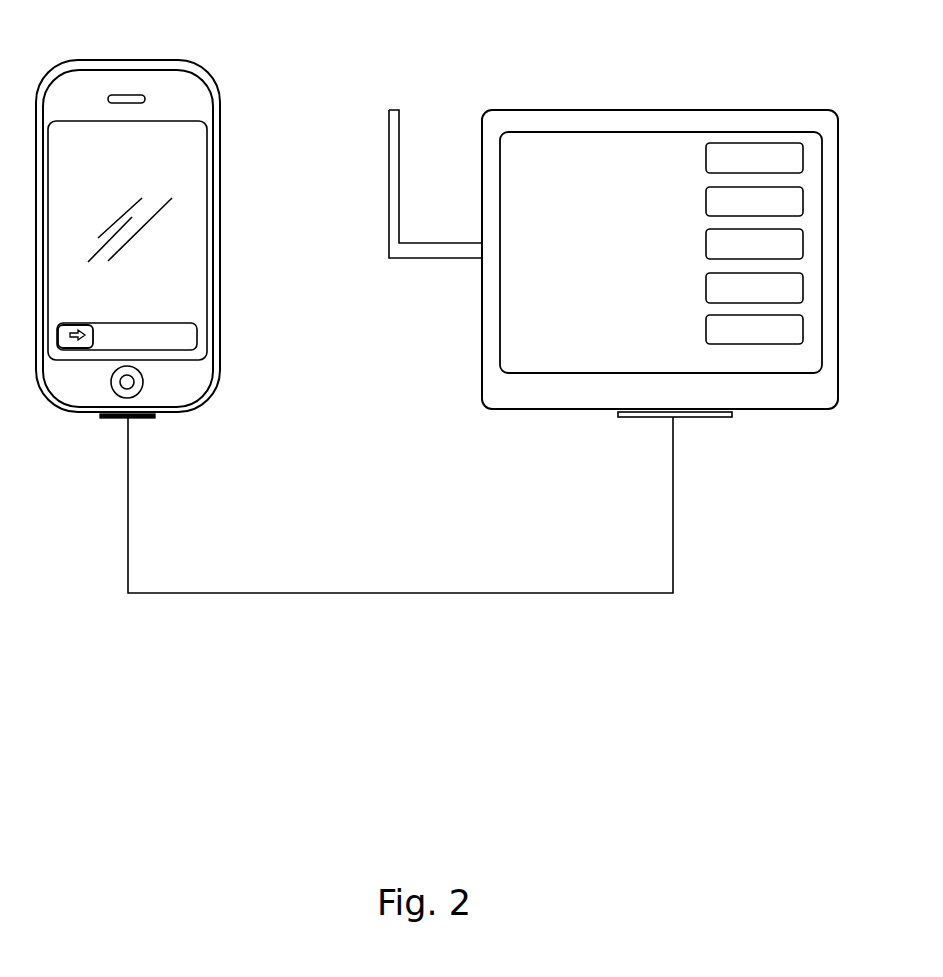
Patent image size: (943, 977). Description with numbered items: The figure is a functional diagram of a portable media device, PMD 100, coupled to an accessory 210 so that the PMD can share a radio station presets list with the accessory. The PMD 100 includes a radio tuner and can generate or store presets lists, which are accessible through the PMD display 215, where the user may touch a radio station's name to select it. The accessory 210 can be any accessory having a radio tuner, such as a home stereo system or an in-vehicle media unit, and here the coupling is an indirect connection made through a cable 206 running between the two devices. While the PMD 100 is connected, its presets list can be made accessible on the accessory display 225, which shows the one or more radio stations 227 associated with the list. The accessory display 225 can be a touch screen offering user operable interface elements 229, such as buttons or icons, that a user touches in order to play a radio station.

The PMD 100 is at (218, 93).
The PMD display 215 is at (106, 155).
The accessory 210 is at (690, 106).
The accessory display 225 is at (560, 373).
The radio stations 227 is at (535, 300).
The user operable interface elements 229 is at (738, 343).
The cable 206 is at (390, 593).